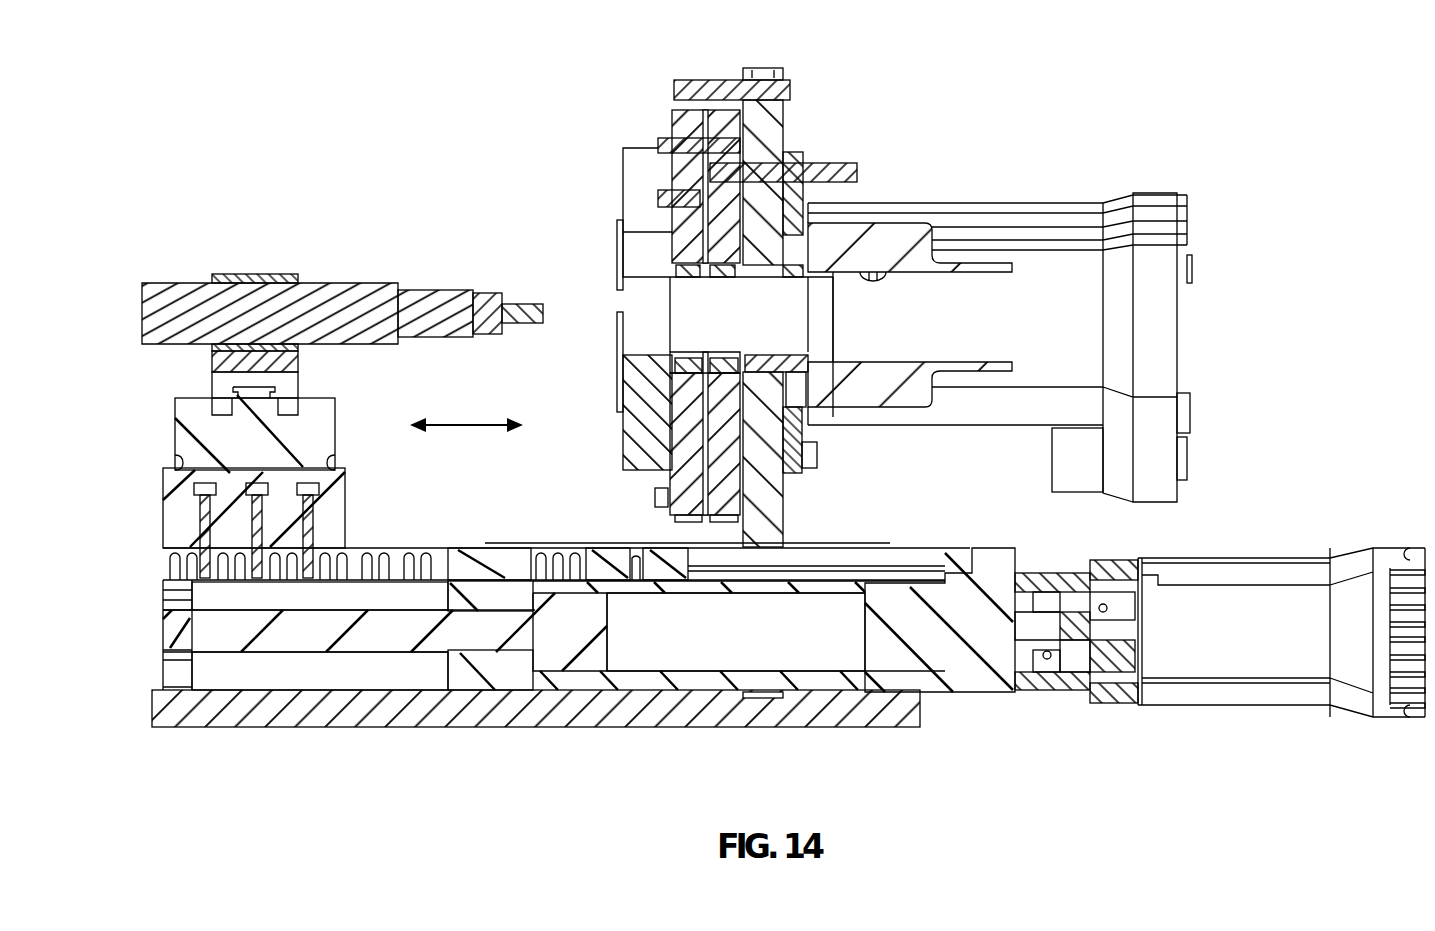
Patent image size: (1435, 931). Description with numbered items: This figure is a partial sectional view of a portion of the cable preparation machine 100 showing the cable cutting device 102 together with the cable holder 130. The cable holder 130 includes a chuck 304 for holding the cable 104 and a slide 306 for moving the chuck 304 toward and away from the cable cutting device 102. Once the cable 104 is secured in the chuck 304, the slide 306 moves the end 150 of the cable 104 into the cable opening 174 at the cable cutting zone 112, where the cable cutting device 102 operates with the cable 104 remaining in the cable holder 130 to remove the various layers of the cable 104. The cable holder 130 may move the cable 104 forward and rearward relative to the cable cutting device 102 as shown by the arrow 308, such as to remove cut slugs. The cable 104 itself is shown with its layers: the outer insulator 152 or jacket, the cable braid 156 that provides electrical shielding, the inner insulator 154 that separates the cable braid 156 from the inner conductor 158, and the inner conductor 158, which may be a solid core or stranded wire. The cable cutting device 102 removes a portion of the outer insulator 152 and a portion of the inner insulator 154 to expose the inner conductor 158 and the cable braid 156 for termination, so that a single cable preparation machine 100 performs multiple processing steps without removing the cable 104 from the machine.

The cable preparation machine 100 is at (900, 48).
The cable cutting device 102 is at (640, 125).
The cable 104 is at (325, 282).
The cable cutting zone 112 is at (708, 295).
The cable holder 130 is at (150, 610).
The end of the cable 150 is at (452, 274).
The outer insulator 152 is at (367, 280).
The inner insulator 154 is at (490, 292).
The cable braid 156 is at (428, 288).
The inner conductor 158 is at (518, 302).
The cable opening 174 is at (788, 296).
The chuck 304 is at (250, 273).
The slide 306 is at (330, 630).
The arrow 308 is at (462, 420).